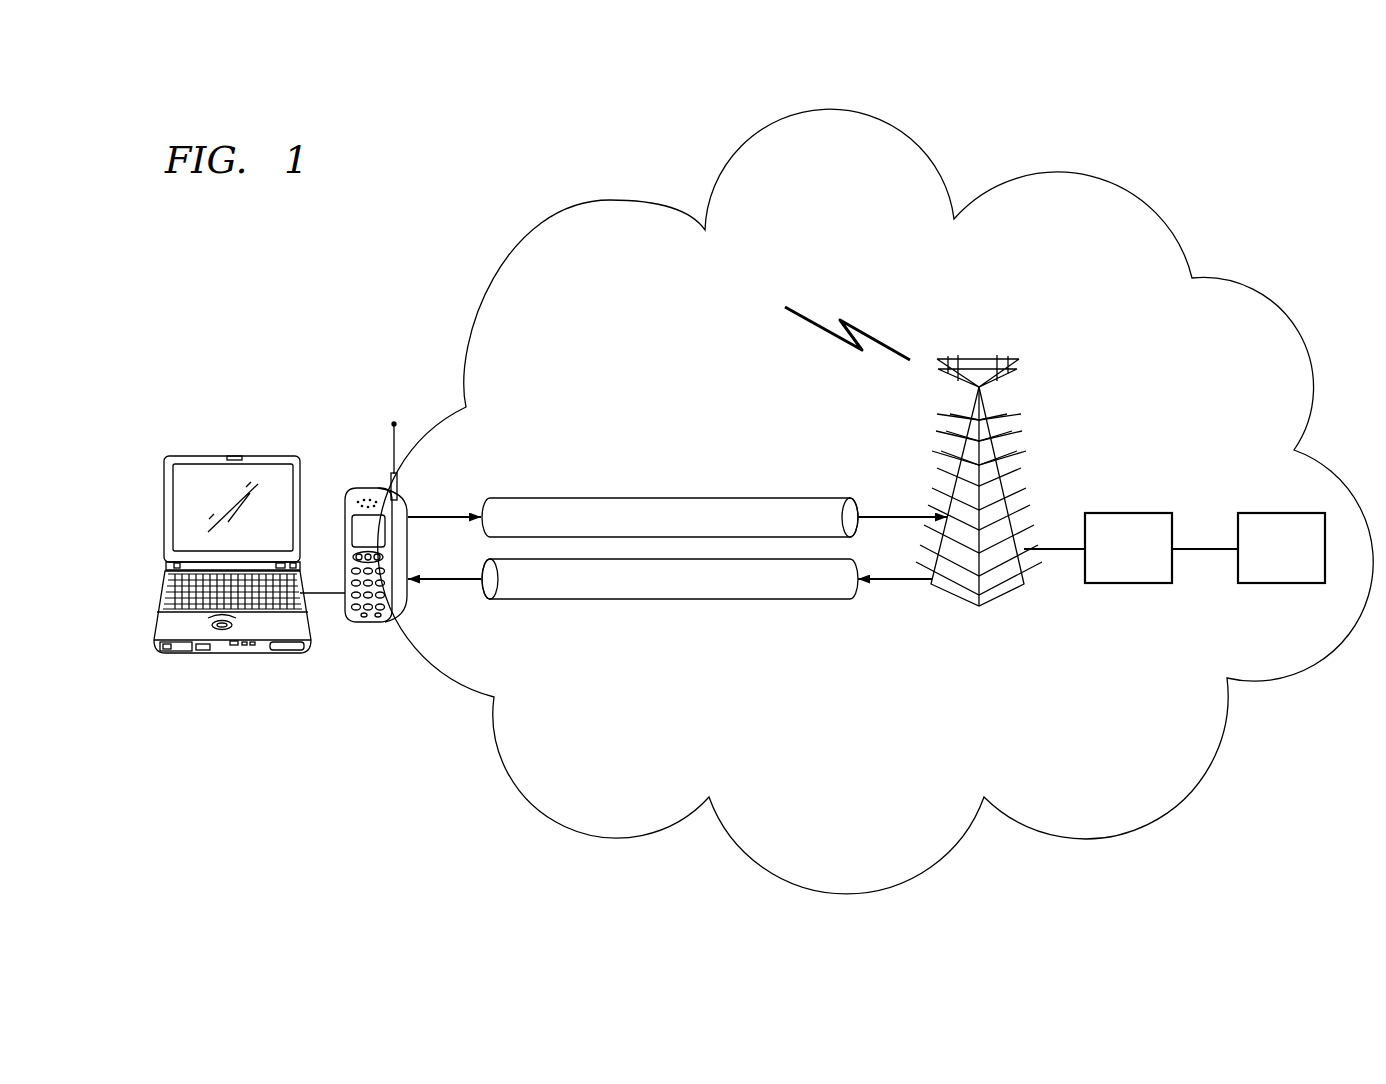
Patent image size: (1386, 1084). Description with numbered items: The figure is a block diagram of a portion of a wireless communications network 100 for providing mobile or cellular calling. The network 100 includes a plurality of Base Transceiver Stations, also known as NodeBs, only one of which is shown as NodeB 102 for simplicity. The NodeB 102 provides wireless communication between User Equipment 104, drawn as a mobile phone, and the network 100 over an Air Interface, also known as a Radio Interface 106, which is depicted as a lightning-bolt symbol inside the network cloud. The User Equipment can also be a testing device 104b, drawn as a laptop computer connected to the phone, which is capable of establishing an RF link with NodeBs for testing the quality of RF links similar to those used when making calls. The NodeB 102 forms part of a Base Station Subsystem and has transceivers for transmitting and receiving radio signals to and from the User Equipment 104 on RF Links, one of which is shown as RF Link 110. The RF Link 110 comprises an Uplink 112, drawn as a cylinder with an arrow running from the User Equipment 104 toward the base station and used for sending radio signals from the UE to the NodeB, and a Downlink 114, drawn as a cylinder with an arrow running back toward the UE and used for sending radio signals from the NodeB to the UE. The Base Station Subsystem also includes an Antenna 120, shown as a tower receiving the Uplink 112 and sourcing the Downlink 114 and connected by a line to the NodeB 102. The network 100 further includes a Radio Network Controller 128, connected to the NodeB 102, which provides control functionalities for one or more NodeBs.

The wireless communications network 100 is at (501, 249).
The Base Transceiver Station 102 is at (1118, 513).
The User Equipment 104 is at (362, 489).
The testing device 104b is at (164, 506).
The Air Interface 106 is at (801, 312).
The RF Link 110 is at (677, 524).
The Uplink 112 is at (726, 498).
The Downlink 114 is at (727, 600).
The Antenna 120 is at (1010, 462).
The Radio Network Controller 128 is at (1270, 513).